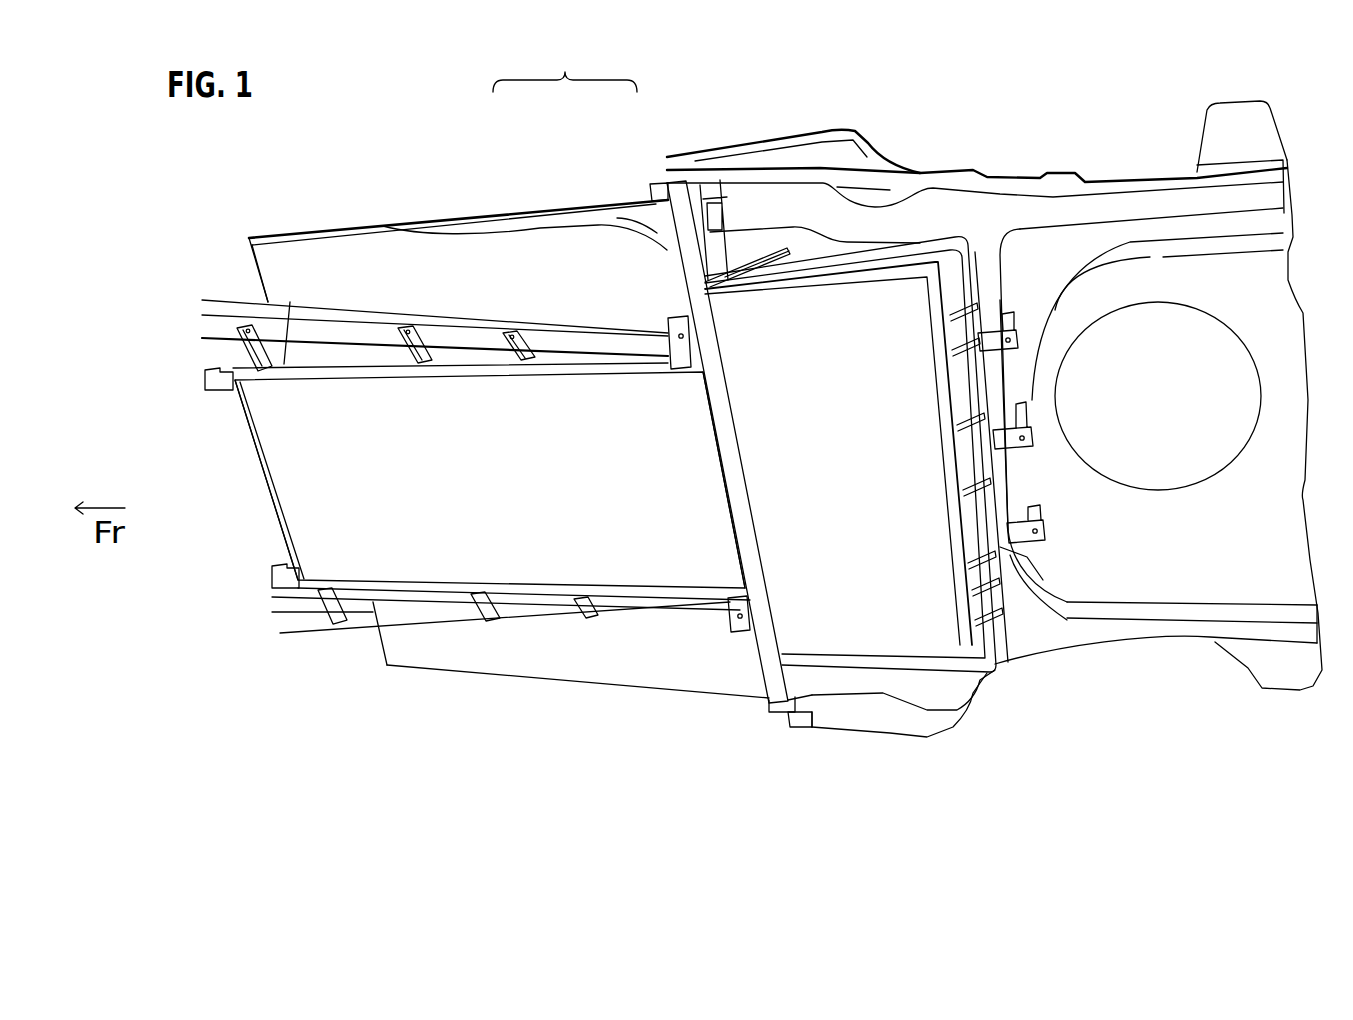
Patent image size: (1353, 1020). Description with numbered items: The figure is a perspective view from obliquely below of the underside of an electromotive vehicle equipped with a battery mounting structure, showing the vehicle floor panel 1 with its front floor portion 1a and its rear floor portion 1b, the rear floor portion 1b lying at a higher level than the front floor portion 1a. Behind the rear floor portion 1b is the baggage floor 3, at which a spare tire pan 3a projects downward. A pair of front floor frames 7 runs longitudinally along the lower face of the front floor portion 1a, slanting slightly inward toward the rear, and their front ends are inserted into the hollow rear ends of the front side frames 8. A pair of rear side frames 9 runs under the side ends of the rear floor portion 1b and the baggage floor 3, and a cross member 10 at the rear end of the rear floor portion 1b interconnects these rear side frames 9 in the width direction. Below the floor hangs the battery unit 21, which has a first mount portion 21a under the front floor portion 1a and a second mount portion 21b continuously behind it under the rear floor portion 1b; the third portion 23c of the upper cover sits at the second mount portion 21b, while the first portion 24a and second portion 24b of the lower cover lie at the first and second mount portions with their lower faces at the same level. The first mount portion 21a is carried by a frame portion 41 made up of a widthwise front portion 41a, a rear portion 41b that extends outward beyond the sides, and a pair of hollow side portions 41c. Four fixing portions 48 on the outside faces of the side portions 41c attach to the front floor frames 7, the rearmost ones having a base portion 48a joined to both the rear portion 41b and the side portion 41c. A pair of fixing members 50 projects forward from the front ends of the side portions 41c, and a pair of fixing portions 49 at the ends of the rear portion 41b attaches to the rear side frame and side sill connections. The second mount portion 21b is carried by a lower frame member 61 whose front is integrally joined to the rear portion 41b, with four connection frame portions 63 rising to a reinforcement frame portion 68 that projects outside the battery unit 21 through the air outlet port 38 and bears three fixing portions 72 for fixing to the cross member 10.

The vehicle floor panel 1 is at (565, 65).
The front floor portion 1a is at (480, 196).
The rear floor portion 1b is at (749, 237).
The baggage floor 3 is at (1061, 246).
The spare tire pan 3a is at (1165, 500).
The front floor frame 7 is at (456, 330).
The front side frame 8 is at (214, 323).
The rear side frame 9 is at (1115, 215).
The cross member 10 is at (1038, 488).
The battery unit 21 is at (581, 391).
The first mount portion 21a is at (443, 575).
The second mount portion 21b is at (866, 642).
The third portion 23c is at (915, 255).
The first portion 24a is at (650, 560).
The second portion 24b is at (940, 635).
The air outlet port 38 is at (1012, 592).
The frame portion 41 is at (626, 610).
The front portion 41a is at (270, 500).
The rear portion 41b is at (765, 650).
The side portion 41c is at (322, 363).
The fixing portion 48 is at (245, 340).
The base portion 48a is at (683, 348).
The fixing portion 49 is at (708, 205).
The fixing member 50 is at (203, 380).
The lower frame member 61 is at (909, 682).
The connection frame portion 63 is at (965, 407).
The reinforcement frame portion 68 is at (1058, 462).
The fixing portion 72 is at (1018, 332).